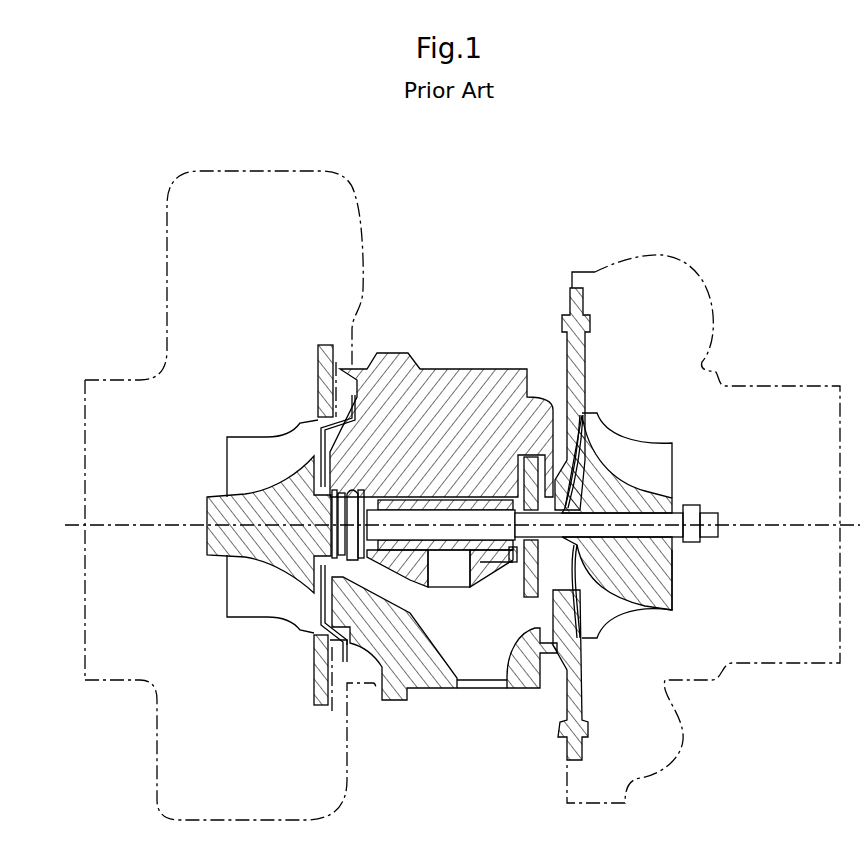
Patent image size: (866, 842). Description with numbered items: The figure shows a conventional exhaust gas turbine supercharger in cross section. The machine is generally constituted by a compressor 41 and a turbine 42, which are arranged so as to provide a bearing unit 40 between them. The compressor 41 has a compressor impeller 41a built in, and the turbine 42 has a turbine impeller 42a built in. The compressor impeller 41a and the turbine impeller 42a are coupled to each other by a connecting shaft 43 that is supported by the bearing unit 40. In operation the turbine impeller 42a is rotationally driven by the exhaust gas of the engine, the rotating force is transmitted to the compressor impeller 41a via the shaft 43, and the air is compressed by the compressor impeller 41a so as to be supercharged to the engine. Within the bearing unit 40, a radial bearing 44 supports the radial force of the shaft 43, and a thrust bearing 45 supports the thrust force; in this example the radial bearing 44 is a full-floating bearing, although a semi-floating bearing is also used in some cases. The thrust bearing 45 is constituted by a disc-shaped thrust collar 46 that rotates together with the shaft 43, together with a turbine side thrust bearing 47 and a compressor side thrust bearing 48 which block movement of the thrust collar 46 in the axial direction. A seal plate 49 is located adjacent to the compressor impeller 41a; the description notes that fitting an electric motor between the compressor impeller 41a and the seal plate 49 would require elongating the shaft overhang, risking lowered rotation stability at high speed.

The bearing unit 40 is at (444, 488).
The compressor 41 is at (720, 362).
The compressor impeller 41a is at (610, 552).
The turbine 42 is at (160, 328).
The turbine impeller 42a is at (232, 543).
The shaft 43 is at (392, 515).
The radial bearing 44 is at (400, 558).
The thrust bearing 45 is at (484, 644).
The thrust collar 46 is at (512, 570).
The turbine side thrust bearing 47 is at (490, 565).
The compressor side thrust bearing 48 is at (530, 582).
The seal plate 49 is at (566, 445).